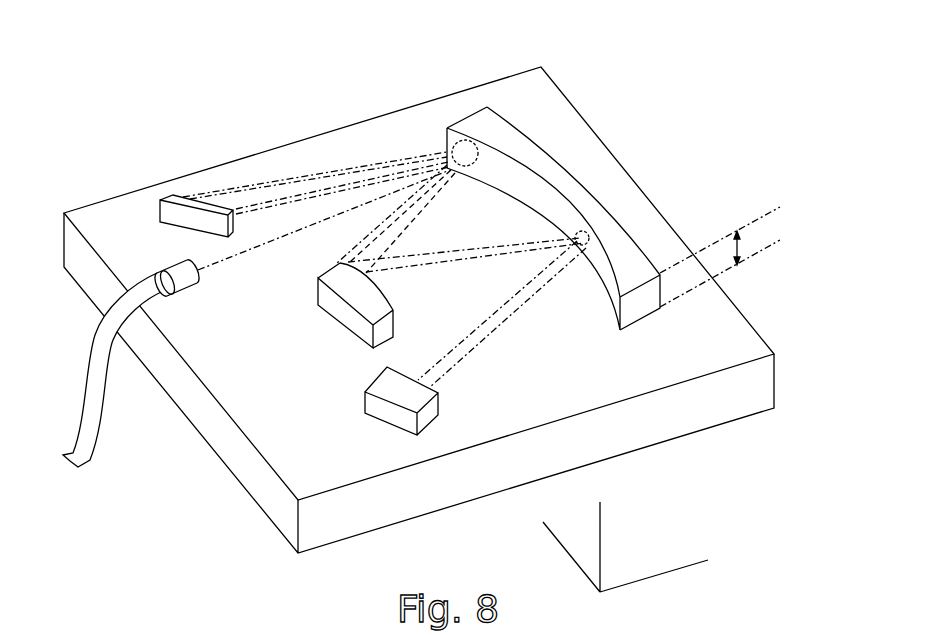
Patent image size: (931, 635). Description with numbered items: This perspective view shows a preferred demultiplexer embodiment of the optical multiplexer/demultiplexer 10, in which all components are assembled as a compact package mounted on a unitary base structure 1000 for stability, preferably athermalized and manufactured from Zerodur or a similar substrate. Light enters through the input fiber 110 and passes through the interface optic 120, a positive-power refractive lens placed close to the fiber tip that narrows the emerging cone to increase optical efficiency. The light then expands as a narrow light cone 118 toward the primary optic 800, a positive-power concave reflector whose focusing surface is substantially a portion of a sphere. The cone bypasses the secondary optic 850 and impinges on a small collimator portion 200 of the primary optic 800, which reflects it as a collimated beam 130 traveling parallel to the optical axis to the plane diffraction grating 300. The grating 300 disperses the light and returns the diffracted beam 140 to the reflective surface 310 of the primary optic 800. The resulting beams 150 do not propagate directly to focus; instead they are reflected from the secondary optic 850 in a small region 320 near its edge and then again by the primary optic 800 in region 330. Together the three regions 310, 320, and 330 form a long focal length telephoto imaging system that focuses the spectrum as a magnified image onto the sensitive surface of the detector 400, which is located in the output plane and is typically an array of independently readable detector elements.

The optical system 10 is at (421, 320).
The base structure 1000 is at (563, 95).
The grating 300 is at (158, 205).
The diffracted beam 140 is at (347, 170).
The collimated beam 130 is at (402, 157).
The light cone 118 is at (310, 229).
The input fiber 110 is at (103, 428).
The interface optic 120 is at (178, 284).
The collimator portion 200 is at (447, 128).
The primary optic 800 is at (546, 210).
The reflective surface 310 is at (477, 140).
The region 330 is at (585, 230).
The beams 150 is at (427, 219).
The region 320 is at (365, 305).
The secondary optic 850 is at (384, 330).
The detector 400 is at (372, 407).